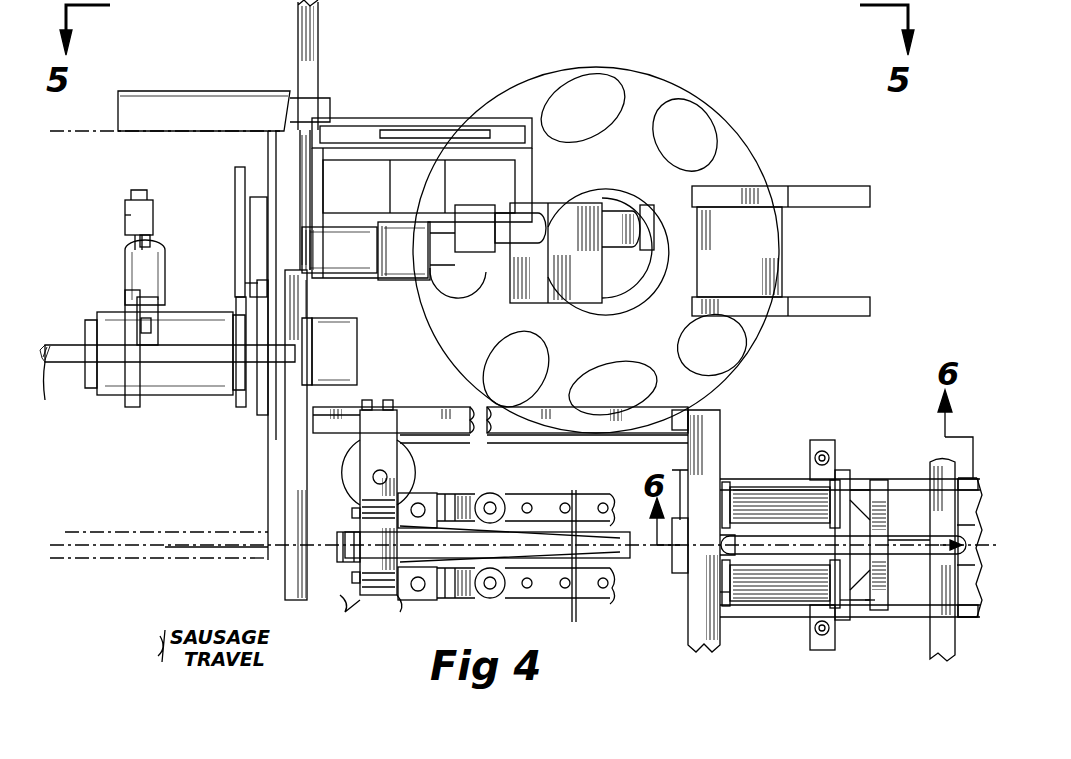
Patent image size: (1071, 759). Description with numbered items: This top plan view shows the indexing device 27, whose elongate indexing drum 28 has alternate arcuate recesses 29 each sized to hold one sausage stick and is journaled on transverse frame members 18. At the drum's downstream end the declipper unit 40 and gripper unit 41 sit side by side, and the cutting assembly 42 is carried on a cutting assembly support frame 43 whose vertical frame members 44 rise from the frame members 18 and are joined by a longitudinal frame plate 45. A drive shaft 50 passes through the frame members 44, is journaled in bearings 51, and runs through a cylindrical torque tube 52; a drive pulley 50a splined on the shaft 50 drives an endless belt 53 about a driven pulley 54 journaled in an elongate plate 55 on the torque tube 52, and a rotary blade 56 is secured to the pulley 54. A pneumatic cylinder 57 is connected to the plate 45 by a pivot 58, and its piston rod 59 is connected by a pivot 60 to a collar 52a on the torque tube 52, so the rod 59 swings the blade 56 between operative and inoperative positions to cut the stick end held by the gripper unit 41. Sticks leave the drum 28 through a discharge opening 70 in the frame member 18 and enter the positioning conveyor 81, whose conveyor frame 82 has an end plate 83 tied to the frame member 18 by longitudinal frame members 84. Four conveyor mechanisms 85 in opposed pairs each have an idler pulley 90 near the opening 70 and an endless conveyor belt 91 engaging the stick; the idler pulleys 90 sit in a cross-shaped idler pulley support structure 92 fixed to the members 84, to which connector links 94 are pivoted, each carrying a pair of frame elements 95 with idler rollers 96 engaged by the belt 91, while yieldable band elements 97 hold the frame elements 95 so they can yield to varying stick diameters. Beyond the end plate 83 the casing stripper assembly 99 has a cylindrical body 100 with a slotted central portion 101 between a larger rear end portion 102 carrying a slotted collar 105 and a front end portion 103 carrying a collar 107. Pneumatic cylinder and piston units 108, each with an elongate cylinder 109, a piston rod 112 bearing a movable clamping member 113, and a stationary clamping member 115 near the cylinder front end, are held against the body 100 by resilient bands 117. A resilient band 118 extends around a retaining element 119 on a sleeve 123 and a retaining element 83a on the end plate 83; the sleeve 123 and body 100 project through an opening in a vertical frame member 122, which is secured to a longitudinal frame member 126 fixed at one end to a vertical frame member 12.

The vertical frame member 12 is at (815, 650).
The transverse frame member 18 is at (318, 32).
The indexing device 27 is at (93, 578).
The indexing drum 28 is at (155, 560).
The arcuate recesses 29 is at (135, 545).
The declipper unit 40 is at (428, 103).
The gripper unit 41 is at (416, 228).
The cutting assembly 42 is at (194, 238).
The cutting assembly support frame 43 is at (67, 345).
The vertical frame members 44 is at (290, 420).
The longitudinal frame plate 45 is at (72, 358).
The drive shaft 50 is at (60, 365).
The drive pulley 50a is at (272, 375).
The bearings 51 is at (357, 350).
The torque tube 52 is at (178, 395).
The collar 52a is at (125, 205).
The endless belt 53 is at (255, 290).
The driven pulley 54 is at (255, 220).
The elongate plate 55 is at (235, 185).
The rotary blade 56 is at (283, 133).
The double acting pneumatic cylinder 57 is at (125, 255).
The pivot 58 is at (132, 318).
The piston rod 59 is at (172, 228).
The pivot 60 is at (155, 200).
The discharge opening 70 is at (292, 560).
The positioning conveyor 81 is at (390, 634).
The positioning conveyor frame 82 is at (440, 408).
The end plate 83 is at (690, 637).
The retaining element 83a is at (692, 605).
The longitudinal frame members 84 is at (425, 408).
The conveyor mechanisms 85 is at (608, 500).
The idler pulley 90 is at (400, 470).
The endless conveyor belt 91 is at (505, 470).
The idler pulley support structure 92 is at (345, 526).
The connector links 94 is at (480, 495).
The frame elements 95 is at (545, 492).
The idler rollers 96 is at (507, 495).
The yieldable band elements 97 is at (573, 622).
The casing stripper assembly 99 is at (758, 638).
The casing stripper body 100 is at (766, 515).
The central portion 101 is at (848, 518).
The rear end portion 102 is at (720, 548).
The front end portion 103 is at (934, 628).
The collar 105 is at (700, 512).
The collar 107 is at (884, 602).
The pneumatic cylinder and piston units 108 is at (802, 596).
The cylinder 109 is at (740, 488).
The piston rod 112 is at (836, 476).
The movable clamping member 113 is at (878, 606).
The stationary clamping member 115 is at (840, 608).
The resilient bands 117 is at (832, 500).
The resilient band 118 is at (914, 538).
The retaining element 119 is at (953, 540).
The vertical frame member 122 is at (940, 655).
The sleeve 123 is at (955, 480).
The longitudinal frame member 126 is at (965, 630).